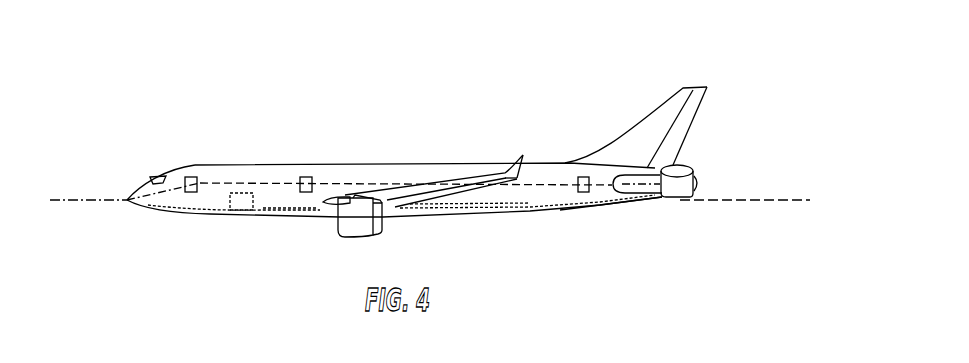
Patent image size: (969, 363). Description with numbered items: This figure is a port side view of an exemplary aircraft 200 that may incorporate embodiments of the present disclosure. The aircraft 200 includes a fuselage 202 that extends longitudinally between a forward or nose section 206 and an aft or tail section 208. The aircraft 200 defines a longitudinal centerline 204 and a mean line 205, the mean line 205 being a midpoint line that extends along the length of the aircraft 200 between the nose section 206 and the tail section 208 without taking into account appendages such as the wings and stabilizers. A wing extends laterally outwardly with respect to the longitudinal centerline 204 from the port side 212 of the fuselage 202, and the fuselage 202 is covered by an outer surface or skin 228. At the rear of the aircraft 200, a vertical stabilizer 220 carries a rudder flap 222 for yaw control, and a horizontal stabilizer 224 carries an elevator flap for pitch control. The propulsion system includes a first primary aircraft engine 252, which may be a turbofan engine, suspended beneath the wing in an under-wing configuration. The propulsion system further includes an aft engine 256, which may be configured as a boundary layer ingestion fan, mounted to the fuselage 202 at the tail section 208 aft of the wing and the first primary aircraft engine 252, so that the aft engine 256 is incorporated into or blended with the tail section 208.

The aircraft 200 is at (173, 120).
The fuselage 202 is at (213, 205).
The longitudinal centerline 204 is at (62, 201).
The mean line 205 is at (233, 182).
The nose section 206 is at (131, 210).
The tail section 208 is at (633, 208).
The port side 212 is at (518, 206).
The vertical stabilizer 220 is at (658, 115).
The rudder flap 222 is at (693, 113).
The horizontal stabilizer 224 is at (667, 200).
The outer surface or skin 228 is at (473, 185).
The first primary aircraft engine 252 is at (347, 236).
The aft engine 256 is at (690, 156).